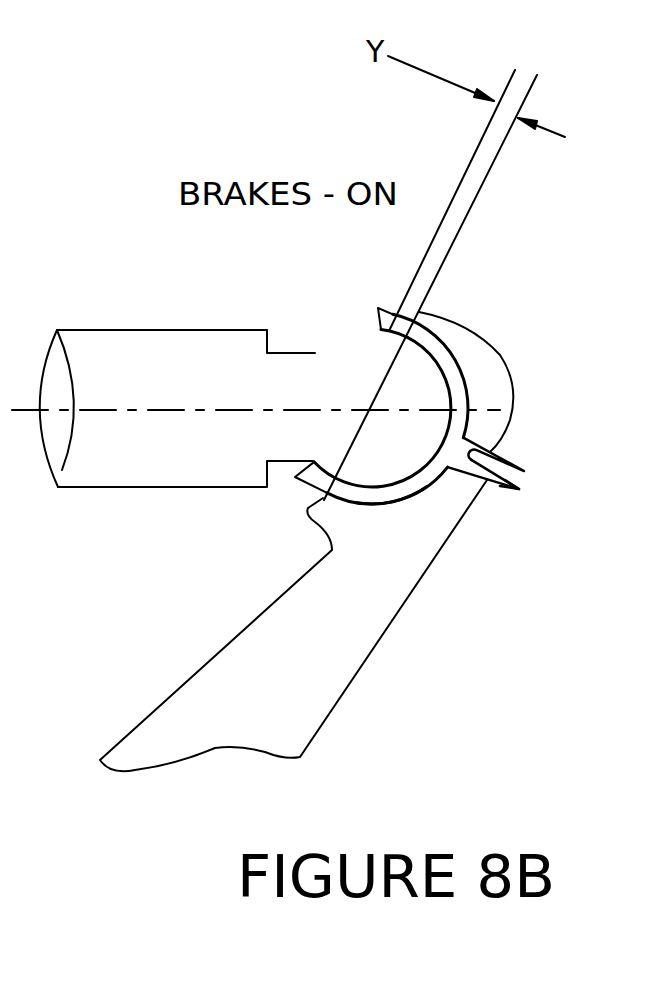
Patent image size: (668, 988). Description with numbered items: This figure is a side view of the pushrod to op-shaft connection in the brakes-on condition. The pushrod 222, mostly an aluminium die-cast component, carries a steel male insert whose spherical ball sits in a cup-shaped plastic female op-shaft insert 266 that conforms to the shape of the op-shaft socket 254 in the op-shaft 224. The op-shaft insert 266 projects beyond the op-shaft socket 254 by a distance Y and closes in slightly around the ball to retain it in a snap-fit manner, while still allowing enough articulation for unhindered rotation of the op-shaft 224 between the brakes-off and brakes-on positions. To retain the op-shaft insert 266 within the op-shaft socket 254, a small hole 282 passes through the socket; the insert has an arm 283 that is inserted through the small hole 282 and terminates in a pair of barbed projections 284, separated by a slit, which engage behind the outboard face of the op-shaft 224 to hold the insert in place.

The pushrod 222 is at (78, 328).
The op-shaft 224 is at (350, 686).
The op-shaft socket 254 is at (466, 344).
The op-shaft insert 266 is at (425, 497).
The small hole 282 is at (487, 442).
The arm 283 is at (510, 450).
The barbed projections 284 is at (504, 490).